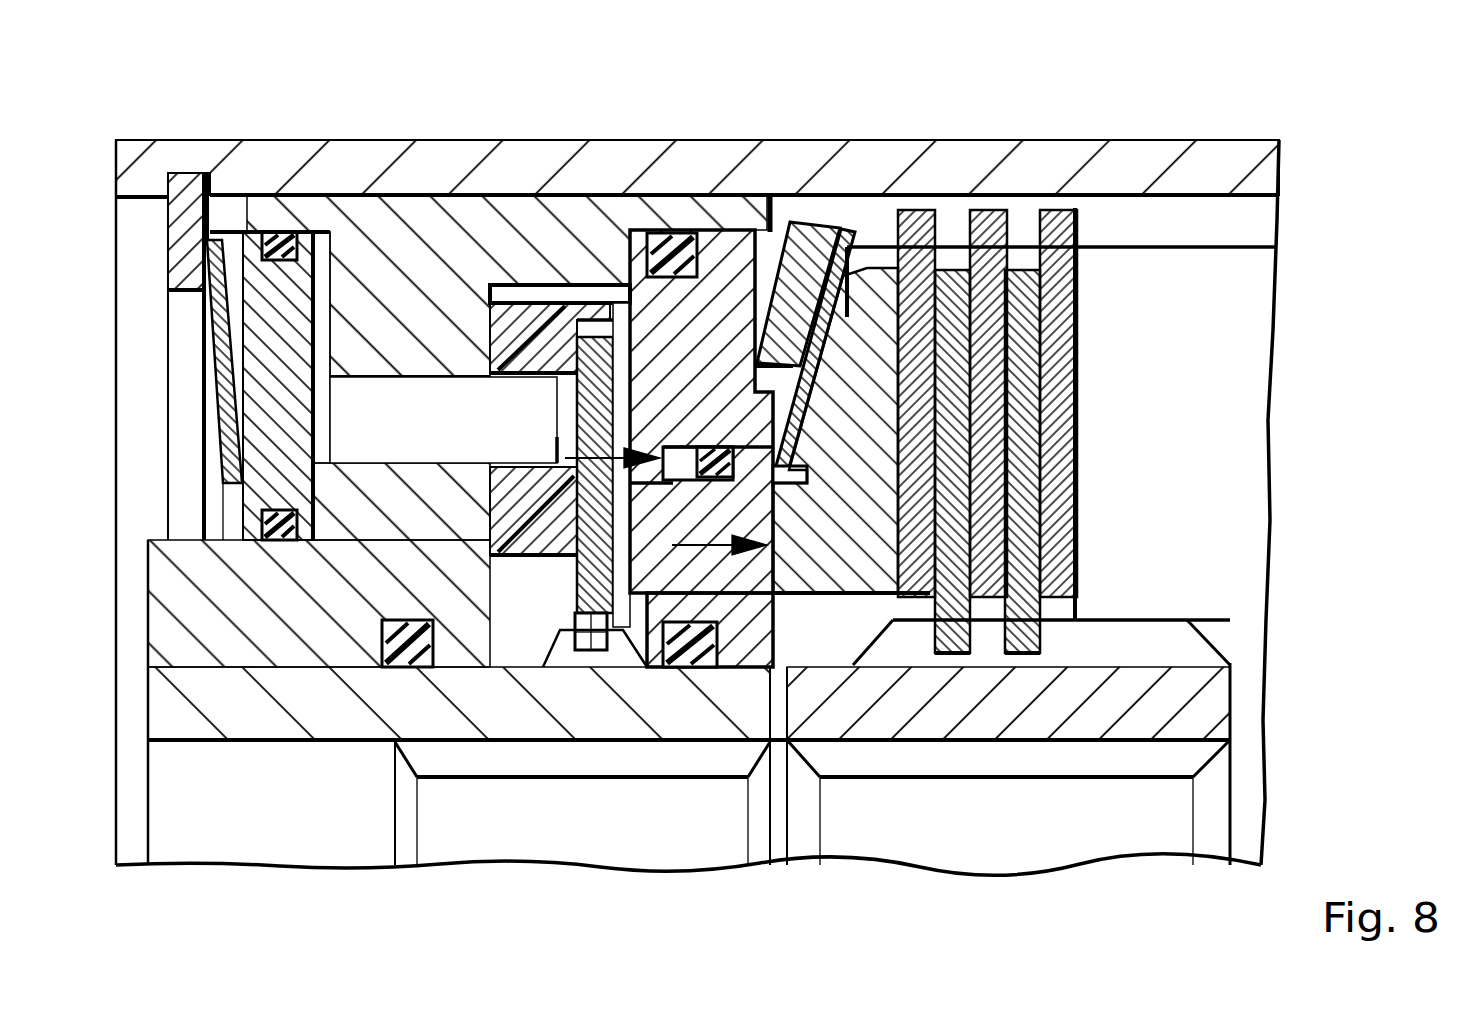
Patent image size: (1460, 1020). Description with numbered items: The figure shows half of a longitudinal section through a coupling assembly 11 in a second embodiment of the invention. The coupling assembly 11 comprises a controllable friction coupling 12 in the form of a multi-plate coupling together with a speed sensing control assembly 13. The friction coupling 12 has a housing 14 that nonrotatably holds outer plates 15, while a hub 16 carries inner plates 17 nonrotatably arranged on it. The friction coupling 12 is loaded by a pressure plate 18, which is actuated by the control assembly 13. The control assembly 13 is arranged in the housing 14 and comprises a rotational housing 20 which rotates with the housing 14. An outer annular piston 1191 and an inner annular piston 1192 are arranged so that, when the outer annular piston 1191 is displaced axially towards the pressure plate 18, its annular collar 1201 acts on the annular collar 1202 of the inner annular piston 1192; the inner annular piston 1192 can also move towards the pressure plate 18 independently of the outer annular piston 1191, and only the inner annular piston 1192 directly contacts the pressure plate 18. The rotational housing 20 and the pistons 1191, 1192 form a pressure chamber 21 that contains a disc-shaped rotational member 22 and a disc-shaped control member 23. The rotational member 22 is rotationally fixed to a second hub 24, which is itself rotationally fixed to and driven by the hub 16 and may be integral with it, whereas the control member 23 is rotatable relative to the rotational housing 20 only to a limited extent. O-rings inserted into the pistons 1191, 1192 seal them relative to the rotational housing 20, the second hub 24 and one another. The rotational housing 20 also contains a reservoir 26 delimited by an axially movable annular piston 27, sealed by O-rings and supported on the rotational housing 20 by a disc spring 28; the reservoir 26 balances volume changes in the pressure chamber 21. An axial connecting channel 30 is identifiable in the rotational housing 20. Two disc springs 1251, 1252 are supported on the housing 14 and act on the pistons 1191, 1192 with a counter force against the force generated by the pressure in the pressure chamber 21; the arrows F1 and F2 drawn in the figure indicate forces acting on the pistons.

The coupling assembly 11 is at (1058, 128).
The controllable friction coupling 12 is at (1095, 306).
The speed sensing control assembly 13 is at (535, 238).
The housing 14 is at (955, 175).
The outer plates 15 is at (990, 228).
The hub 16 is at (1035, 715).
The inner plates 17 is at (957, 627).
The pressure plate 18 is at (853, 543).
The rotational housing 20 is at (468, 255).
The pressure chamber 21 is at (613, 300).
The rotational member 22 is at (596, 590).
The control member 23 is at (540, 515).
The second hub 24 is at (468, 700).
The reservoir 26 is at (323, 250).
The annular piston 27 is at (267, 290).
The disc spring 28 is at (220, 290).
The axial connecting channel 30 is at (378, 415).
The outer annular piston 1191 is at (720, 270).
The inner annular piston 1192 is at (752, 607).
The annular collar 1201 is at (647, 473).
The annular collar 1202 is at (665, 445).
The disc spring 1251 is at (797, 235).
The disc spring 1252 is at (843, 237).
The force F1 is at (556, 452).
The force F2 is at (719, 530).